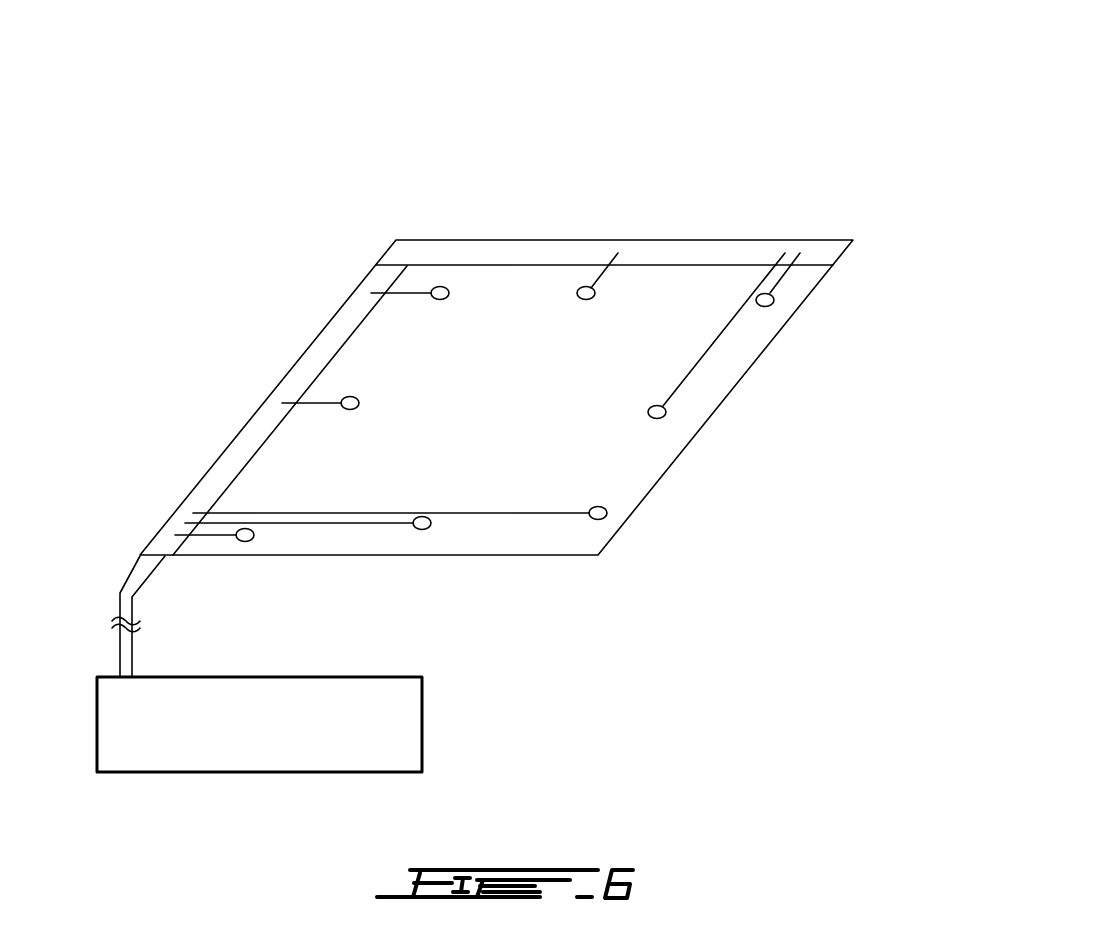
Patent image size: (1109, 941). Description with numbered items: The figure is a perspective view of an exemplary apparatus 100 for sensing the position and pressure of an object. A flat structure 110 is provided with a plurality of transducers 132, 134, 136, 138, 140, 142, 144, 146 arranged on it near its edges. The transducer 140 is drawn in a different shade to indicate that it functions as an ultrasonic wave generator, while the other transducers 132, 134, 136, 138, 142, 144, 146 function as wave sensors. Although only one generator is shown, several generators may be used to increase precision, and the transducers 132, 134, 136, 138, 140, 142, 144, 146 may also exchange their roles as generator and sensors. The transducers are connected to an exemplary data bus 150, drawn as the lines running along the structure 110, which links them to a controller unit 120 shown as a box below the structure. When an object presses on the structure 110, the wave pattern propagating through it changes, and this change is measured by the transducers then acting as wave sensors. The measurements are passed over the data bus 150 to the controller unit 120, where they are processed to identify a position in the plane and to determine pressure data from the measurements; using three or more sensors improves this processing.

The apparatus 100 is at (767, 182).
The structure 110 is at (597, 556).
The controller unit 120 is at (422, 740).
The transducer 132 is at (607, 513).
The transducer 134 is at (666, 412).
The transducer 136 is at (774, 301).
The transducer 138 is at (588, 286).
The transducer 140 is at (443, 286).
The transducer 142 is at (350, 396).
The transducer 144 is at (243, 542).
The transducer 146 is at (421, 530).
The data bus 150 is at (390, 248).